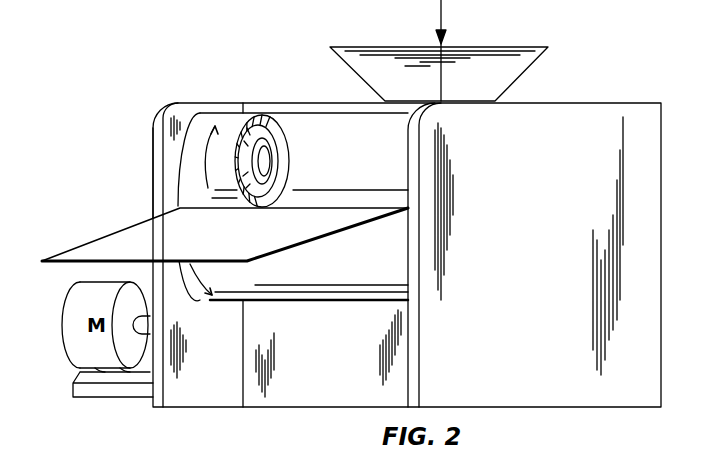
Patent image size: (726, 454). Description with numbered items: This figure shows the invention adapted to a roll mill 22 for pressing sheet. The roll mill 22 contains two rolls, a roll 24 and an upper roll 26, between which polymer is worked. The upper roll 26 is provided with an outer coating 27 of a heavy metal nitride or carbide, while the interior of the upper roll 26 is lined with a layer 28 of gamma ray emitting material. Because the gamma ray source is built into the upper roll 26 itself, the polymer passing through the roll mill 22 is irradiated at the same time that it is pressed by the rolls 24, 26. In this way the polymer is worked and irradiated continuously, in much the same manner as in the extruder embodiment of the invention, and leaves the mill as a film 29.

The roll mill 22 is at (548, 244).
The roll 24 is at (343, 269).
The upper roll 26 is at (280, 124).
The outer coating 27 is at (254, 144).
The layer of gamma ray emitting material 28 is at (258, 172).
The film 29 is at (250, 239).